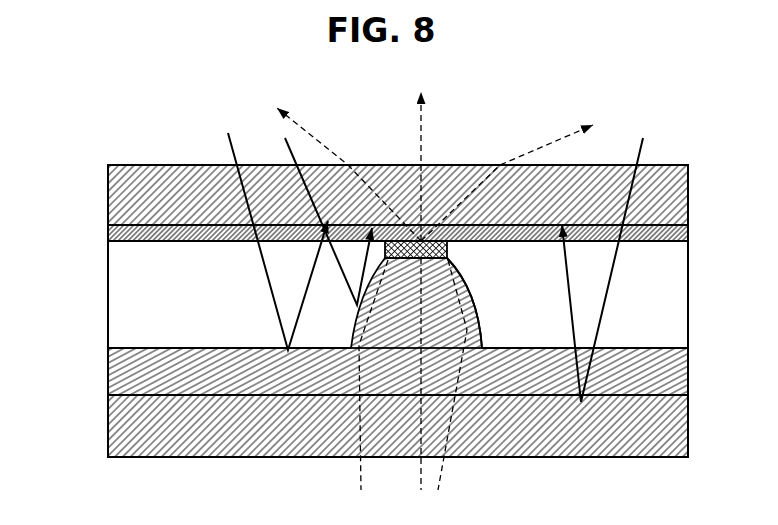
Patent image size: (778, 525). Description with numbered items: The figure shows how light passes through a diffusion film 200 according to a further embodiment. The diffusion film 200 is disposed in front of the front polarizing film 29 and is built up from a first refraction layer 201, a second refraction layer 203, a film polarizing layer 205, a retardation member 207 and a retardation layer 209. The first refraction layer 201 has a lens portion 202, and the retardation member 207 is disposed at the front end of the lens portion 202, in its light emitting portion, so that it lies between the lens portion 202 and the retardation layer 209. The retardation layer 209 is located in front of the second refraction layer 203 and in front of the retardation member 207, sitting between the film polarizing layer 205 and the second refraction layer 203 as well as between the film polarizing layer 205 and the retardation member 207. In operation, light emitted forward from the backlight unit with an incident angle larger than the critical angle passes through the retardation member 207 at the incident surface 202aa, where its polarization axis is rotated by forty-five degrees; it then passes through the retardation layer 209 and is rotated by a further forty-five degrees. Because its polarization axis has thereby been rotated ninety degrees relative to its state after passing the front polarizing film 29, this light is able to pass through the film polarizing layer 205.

The diffusion film 200 is at (97, 300).
The film polarizing layer 205 is at (690, 196).
The retardation layer 209 is at (690, 237).
The second refraction layer 203 is at (690, 283).
The first refraction layer 201 is at (690, 357).
The front polarizing film 29 is at (690, 411).
The lens portion 202 is at (483, 333).
The incident surface 202aa is at (468, 283).
The retardation member 207 is at (449, 250).